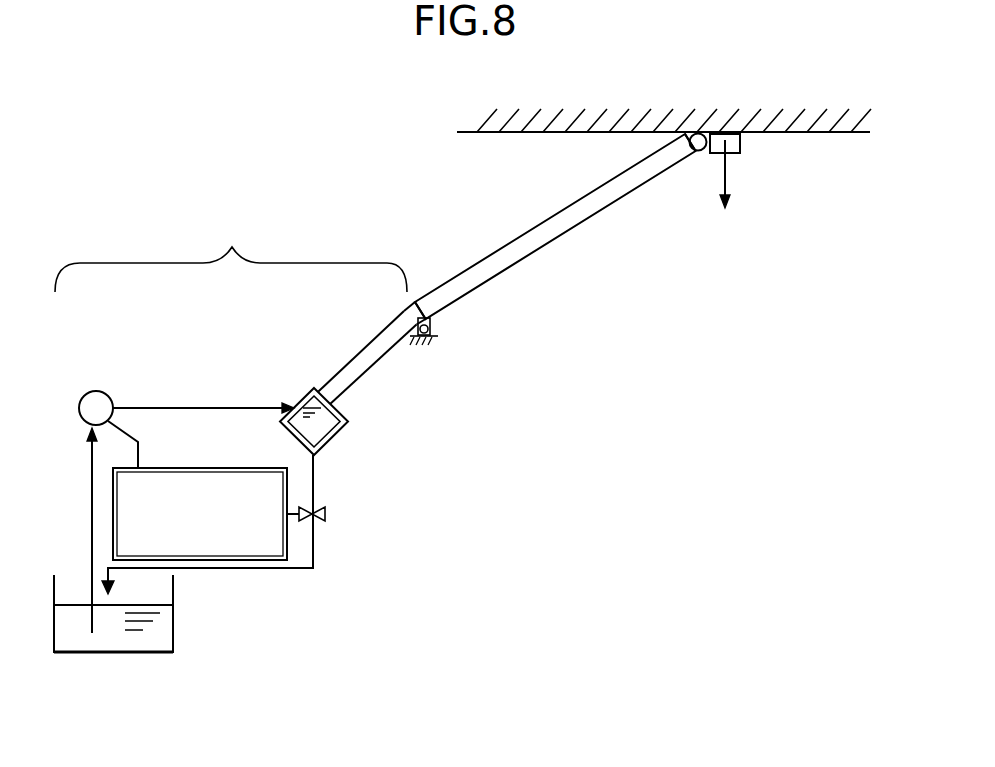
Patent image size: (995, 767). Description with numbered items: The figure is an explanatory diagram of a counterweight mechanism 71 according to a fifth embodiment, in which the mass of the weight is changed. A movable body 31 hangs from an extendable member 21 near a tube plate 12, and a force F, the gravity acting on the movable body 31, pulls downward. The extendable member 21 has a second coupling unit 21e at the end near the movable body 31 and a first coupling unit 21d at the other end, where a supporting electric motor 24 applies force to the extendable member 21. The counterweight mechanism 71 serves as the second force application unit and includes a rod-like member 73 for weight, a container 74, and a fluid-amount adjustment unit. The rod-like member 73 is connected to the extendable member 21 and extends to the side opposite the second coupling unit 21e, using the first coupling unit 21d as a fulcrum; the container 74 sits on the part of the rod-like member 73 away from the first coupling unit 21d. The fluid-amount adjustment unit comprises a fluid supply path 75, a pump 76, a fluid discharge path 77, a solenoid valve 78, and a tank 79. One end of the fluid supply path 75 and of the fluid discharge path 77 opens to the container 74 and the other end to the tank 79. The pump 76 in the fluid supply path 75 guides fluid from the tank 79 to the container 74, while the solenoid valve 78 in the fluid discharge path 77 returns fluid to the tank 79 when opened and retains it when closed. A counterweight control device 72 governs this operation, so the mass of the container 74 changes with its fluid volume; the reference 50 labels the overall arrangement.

The tube plate 12 is at (835, 133).
The extendable member 21 is at (568, 230).
The first coupling unit 21d is at (430, 311).
The second coupling unit 21e is at (679, 156).
The supporting electric motor 24 is at (432, 332).
The movable body 31 is at (740, 143).
The force F is at (727, 177).
The counterweight mechanism 50 is at (418, 204).
The counterweight mechanism 71 is at (231, 256).
The counterweight control device 72 is at (245, 469).
The rod-like member for weight 73 is at (370, 376).
The container 74 is at (333, 435).
The fluid supply path 75 is at (90, 478).
The pump 76 is at (160, 405).
The fluid discharge path 77 is at (312, 540).
The solenoid valve 78 is at (325, 514).
The tank 79 is at (173, 632).